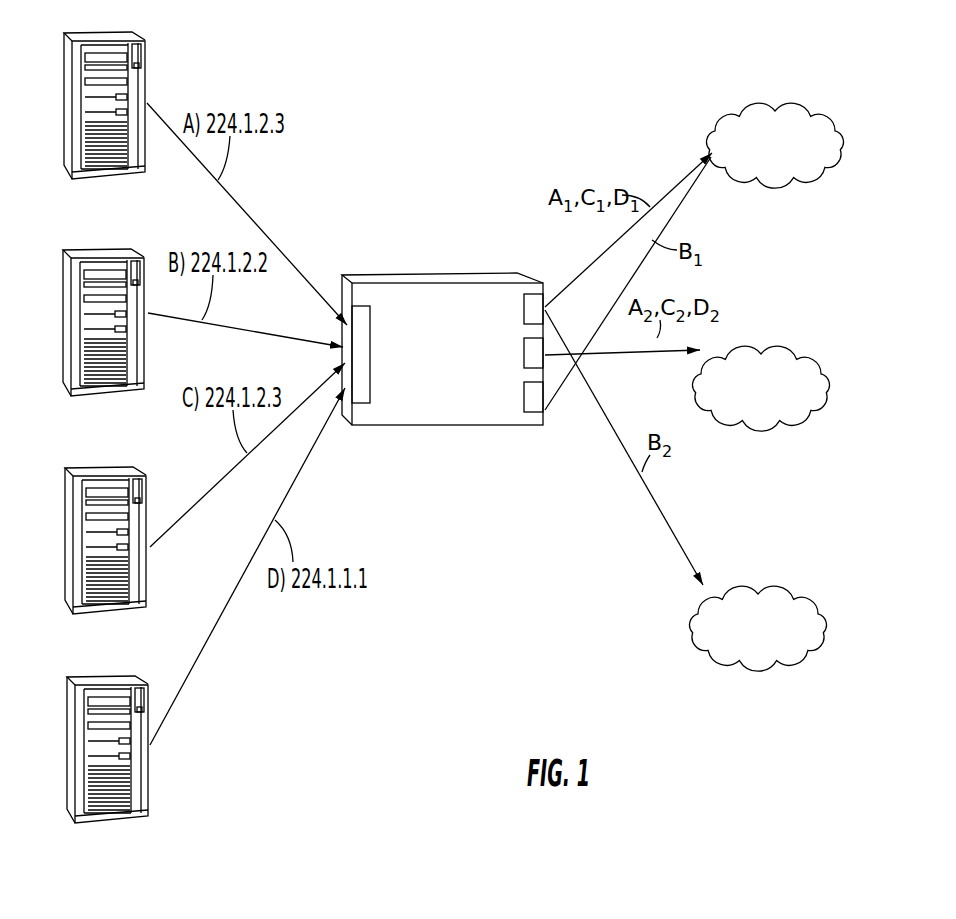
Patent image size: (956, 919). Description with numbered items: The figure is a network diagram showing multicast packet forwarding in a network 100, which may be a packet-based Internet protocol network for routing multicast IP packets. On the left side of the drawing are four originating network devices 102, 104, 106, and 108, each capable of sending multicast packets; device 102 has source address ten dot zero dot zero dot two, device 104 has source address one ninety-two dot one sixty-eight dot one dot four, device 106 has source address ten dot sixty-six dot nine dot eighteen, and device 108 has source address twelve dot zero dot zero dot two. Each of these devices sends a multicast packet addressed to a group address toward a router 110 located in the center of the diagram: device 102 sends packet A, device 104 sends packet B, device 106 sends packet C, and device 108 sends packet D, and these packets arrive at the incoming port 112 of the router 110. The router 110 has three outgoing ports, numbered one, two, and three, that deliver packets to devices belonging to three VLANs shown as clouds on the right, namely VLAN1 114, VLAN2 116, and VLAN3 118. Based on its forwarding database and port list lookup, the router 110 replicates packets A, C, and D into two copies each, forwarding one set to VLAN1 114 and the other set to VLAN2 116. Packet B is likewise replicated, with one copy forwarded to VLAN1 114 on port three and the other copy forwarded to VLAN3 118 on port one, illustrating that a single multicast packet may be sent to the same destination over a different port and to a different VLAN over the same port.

The network 100 is at (475, 235).
The originating network device 102 is at (62, 72).
The originating network device 104 is at (62, 291).
The originating network device 106 is at (64, 509).
The originating network device 108 is at (66, 720).
The router 110 is at (463, 427).
The incoming port 112 is at (355, 312).
The VLAN1 114 is at (828, 110).
The VLAN2 116 is at (795, 348).
The VLAN3 118 is at (808, 593).